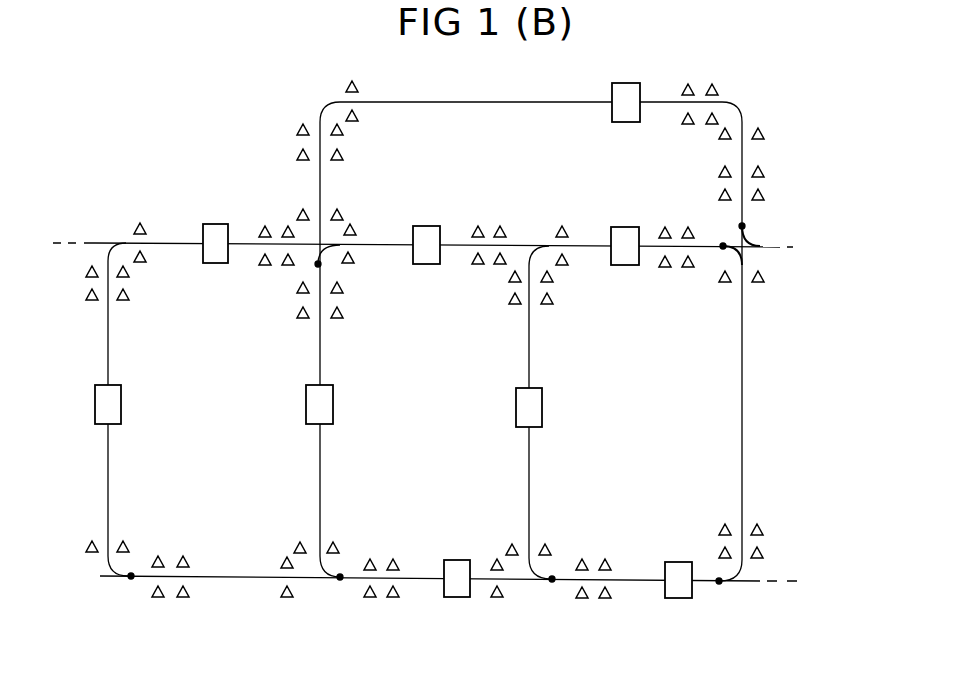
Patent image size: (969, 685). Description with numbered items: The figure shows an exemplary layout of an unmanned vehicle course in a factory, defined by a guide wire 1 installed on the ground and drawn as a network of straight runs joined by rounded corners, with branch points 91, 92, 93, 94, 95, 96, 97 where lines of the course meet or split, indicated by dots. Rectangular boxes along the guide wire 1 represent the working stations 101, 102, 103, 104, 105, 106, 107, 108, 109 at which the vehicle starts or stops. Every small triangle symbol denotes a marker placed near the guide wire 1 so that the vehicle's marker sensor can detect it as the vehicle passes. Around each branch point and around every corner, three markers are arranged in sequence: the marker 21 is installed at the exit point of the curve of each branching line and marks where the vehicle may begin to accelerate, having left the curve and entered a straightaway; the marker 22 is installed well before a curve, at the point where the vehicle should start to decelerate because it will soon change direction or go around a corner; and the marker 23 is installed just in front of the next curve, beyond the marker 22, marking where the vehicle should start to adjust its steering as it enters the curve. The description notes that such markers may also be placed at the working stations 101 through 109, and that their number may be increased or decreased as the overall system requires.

The guide wire 1 is at (490, 104).
The marker 21 is at (356, 231).
The marker 22 is at (301, 317).
The marker 23 is at (301, 292).
The branch point 91 is at (552, 581).
The branch point 92 is at (340, 579).
The branch point 93 is at (131, 578).
The branch point 94 is at (318, 264).
The branch point 95 is at (722, 249).
The branch point 96 is at (742, 226).
The branch point 97 is at (719, 583).
The working station 101 is at (679, 598).
The working station 102 is at (461, 597).
The working station 103 is at (333, 405).
The working station 104 is at (121, 405).
The working station 105 is at (222, 263).
The working station 106 is at (433, 264).
The working station 107 is at (634, 265).
The working station 108 is at (633, 122).
The working station 109 is at (542, 407).